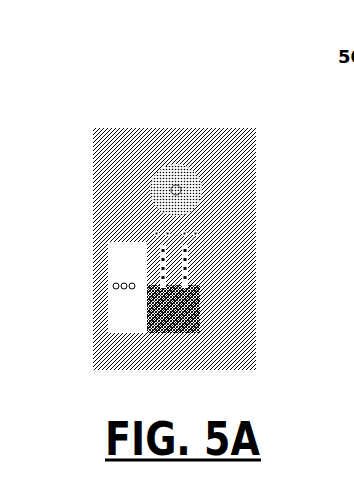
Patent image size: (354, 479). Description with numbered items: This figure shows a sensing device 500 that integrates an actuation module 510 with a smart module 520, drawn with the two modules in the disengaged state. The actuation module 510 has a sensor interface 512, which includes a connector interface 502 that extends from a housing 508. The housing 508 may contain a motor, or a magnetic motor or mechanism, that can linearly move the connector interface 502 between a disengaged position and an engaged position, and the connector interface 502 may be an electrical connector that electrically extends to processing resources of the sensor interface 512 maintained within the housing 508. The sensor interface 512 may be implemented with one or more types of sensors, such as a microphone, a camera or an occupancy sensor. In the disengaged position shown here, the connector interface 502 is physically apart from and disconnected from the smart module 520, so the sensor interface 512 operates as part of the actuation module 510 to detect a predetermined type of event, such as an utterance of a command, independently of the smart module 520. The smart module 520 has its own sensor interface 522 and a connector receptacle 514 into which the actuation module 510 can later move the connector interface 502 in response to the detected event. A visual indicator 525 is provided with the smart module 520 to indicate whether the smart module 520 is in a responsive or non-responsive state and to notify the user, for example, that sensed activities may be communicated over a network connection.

The sensing device 500 is at (78, 101).
The connector interface 502 is at (185, 263).
The housing 508 is at (173, 310).
The actuation module 510 is at (125, 324).
The sensor interface 512 is at (130, 267).
The connector receptacle 514 is at (173, 220).
The smart module 520 is at (241, 209).
The sensor interface 522 is at (173, 198).
The visual indicator 525 is at (195, 164).